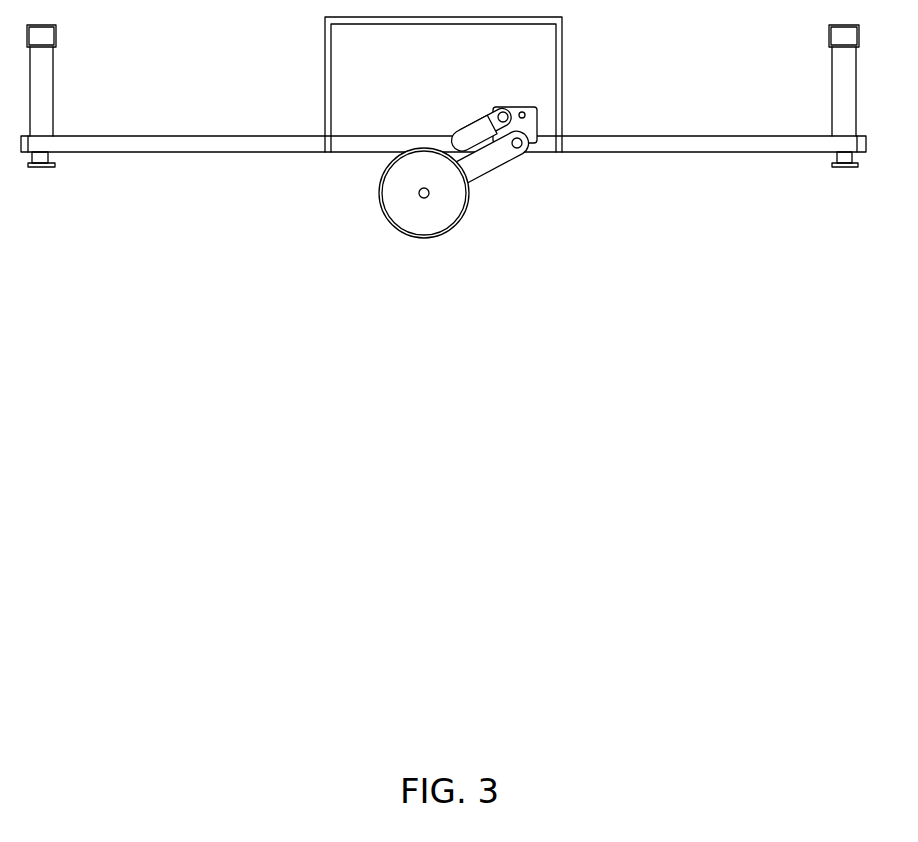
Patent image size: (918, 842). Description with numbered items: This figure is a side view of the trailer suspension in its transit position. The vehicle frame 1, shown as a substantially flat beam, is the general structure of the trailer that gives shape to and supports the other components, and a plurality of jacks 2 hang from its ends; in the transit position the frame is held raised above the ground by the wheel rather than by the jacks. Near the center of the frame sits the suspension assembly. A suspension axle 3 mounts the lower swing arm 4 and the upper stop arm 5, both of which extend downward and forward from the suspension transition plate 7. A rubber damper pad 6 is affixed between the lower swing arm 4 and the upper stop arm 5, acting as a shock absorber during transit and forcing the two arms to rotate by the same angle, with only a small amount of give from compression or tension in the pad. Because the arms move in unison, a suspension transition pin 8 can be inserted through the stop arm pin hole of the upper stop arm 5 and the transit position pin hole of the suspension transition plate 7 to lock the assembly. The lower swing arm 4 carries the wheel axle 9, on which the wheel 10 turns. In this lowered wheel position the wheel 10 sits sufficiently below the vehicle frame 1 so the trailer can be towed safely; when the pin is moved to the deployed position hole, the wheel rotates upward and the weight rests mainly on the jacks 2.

The vehicle frame 1 is at (305, 165).
The jacks 2 is at (47, 157).
The suspension axle 3 is at (521, 147).
The lower swing arm 4 is at (482, 167).
The upper stop arm 5 is at (492, 118).
The rubber damper pad 6 is at (480, 137).
The suspension transition plate 7 is at (535, 113).
The suspension transition pin 8 is at (513, 108).
The wheel axle 9 is at (423, 188).
The wheel 10 is at (442, 232).